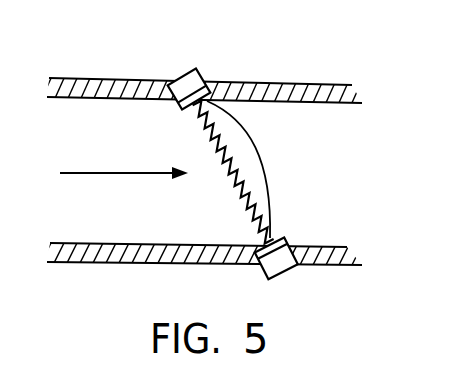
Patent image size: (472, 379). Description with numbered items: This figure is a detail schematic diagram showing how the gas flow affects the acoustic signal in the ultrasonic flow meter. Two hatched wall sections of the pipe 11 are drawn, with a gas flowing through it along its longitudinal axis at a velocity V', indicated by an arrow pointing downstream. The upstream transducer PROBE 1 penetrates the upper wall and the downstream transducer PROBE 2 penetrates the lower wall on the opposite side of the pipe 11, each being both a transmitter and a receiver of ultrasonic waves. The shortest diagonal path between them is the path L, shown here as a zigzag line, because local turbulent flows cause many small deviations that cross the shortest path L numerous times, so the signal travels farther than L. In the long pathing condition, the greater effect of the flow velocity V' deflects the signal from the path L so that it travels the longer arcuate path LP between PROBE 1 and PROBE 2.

The pipe 11 is at (88, 78).
The upstream transducer PROBE 1 is at (195, 68).
The downstream transducer PROBE 2 is at (286, 275).
The diagonal signal path L is at (232, 180).
The arcuate long path LP is at (258, 166).
The gas flow velocity V' is at (124, 161).